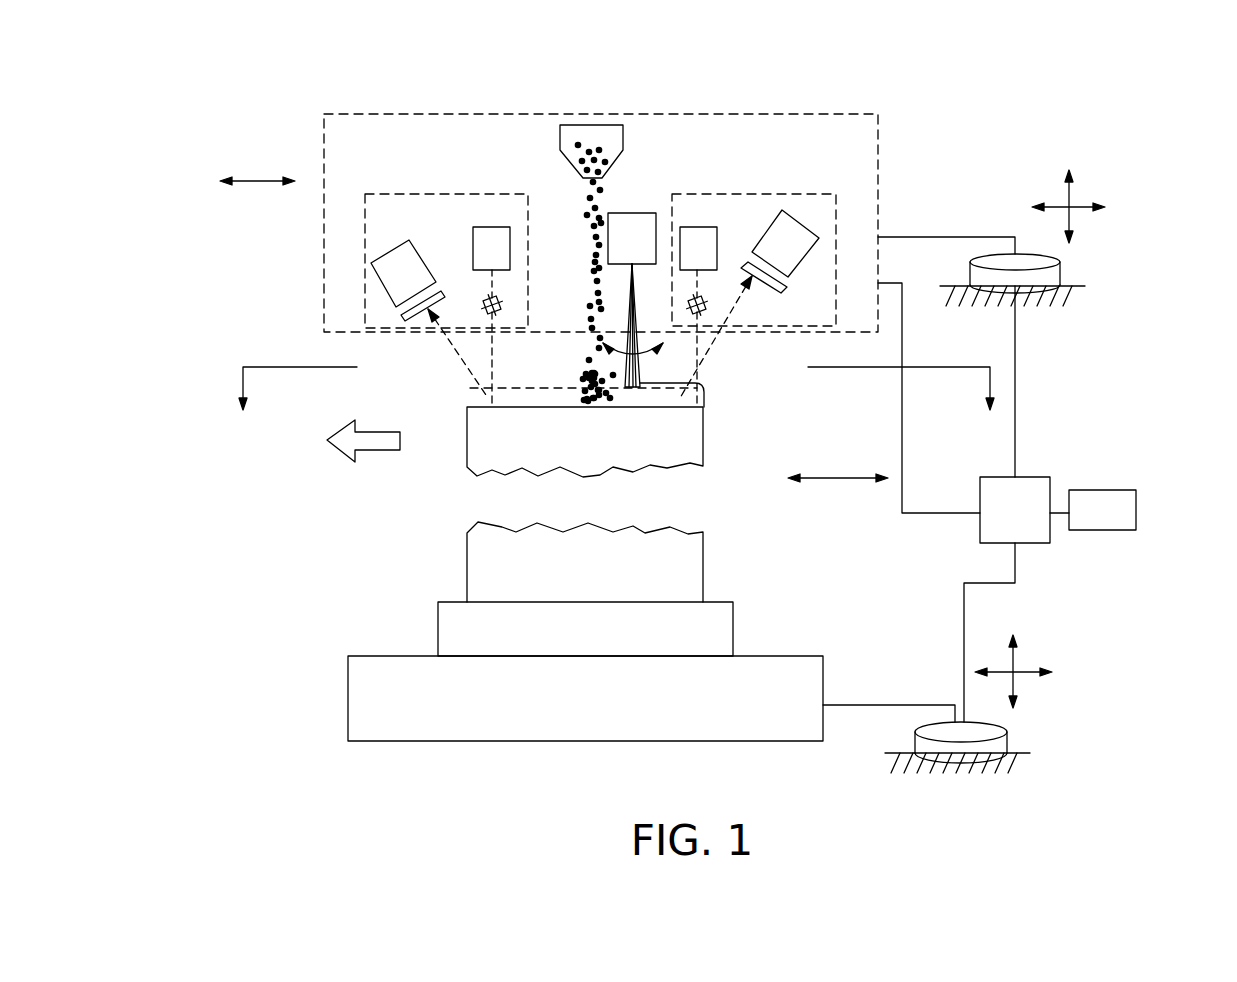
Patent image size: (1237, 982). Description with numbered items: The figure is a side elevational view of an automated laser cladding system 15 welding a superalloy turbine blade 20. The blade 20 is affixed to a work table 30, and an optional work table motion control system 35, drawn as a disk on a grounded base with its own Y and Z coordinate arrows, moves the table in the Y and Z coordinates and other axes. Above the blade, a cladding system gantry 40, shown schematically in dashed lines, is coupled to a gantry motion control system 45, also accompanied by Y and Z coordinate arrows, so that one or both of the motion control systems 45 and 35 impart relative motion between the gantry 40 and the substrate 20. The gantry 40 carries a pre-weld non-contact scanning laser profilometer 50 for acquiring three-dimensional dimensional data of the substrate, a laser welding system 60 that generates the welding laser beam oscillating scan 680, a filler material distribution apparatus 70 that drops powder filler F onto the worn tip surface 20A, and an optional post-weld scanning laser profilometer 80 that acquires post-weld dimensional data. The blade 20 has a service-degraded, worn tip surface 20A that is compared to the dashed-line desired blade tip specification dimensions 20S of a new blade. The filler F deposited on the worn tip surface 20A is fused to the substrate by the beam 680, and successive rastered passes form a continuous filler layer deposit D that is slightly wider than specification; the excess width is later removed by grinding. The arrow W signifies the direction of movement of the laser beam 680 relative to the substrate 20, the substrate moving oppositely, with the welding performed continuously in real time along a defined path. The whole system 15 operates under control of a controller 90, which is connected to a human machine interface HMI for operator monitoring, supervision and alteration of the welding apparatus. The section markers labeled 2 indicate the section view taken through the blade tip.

The automated laser cladding system 15 is at (938, 184).
The superalloy turbine blade 20 is at (741, 572).
The worn tip surface 20A is at (500, 400).
The desired blade tip specification dimensions 20S is at (500, 390).
The work table 30 is at (425, 710).
The work table motion control system 35 is at (985, 733).
The cladding system gantry 40 is at (313, 232).
The gantry motion control system 45 is at (1040, 264).
The pre-weld scanning laser profilometer 50 is at (432, 190).
The laser welding system 60 is at (630, 211).
The filler material distribution apparatus 70 is at (558, 157).
The post-weld scanning laser profilometer 80 is at (763, 192).
The controller 90 is at (919, 598).
The welding laser beam oscillating scan 680 is at (641, 371).
The powder filler F is at (590, 378).
The filler layer deposit D is at (710, 400).
The directional movement arrow W is at (383, 441).
The human machine interface HMI is at (1093, 510).
The section line 2- 2 is at (616, 409).
The Y coordinate Y is at (1051, 431).
The Z coordinate Z is at (1051, 444).